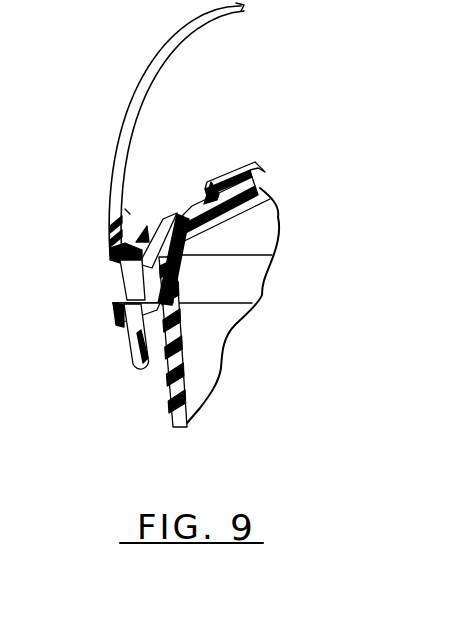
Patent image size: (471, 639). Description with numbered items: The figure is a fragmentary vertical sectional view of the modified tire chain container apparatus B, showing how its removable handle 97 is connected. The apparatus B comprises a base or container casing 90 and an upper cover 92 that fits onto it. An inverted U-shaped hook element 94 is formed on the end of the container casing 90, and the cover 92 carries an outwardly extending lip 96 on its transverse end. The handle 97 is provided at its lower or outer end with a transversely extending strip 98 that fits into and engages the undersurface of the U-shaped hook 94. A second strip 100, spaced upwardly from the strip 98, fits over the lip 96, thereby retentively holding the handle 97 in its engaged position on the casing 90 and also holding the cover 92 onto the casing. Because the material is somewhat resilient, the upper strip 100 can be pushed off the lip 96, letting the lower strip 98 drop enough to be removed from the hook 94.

The container casing 90 is at (171, 402).
The upper cover 92 is at (210, 191).
The inverted U-shaped hook element 94 is at (127, 320).
The outwardly extending lip 96 is at (118, 262).
The handle 97 is at (153, 61).
The transversely extending strip 98 is at (130, 333).
The second strip 100 is at (117, 245).
The tire chain container apparatus B is at (304, 104).